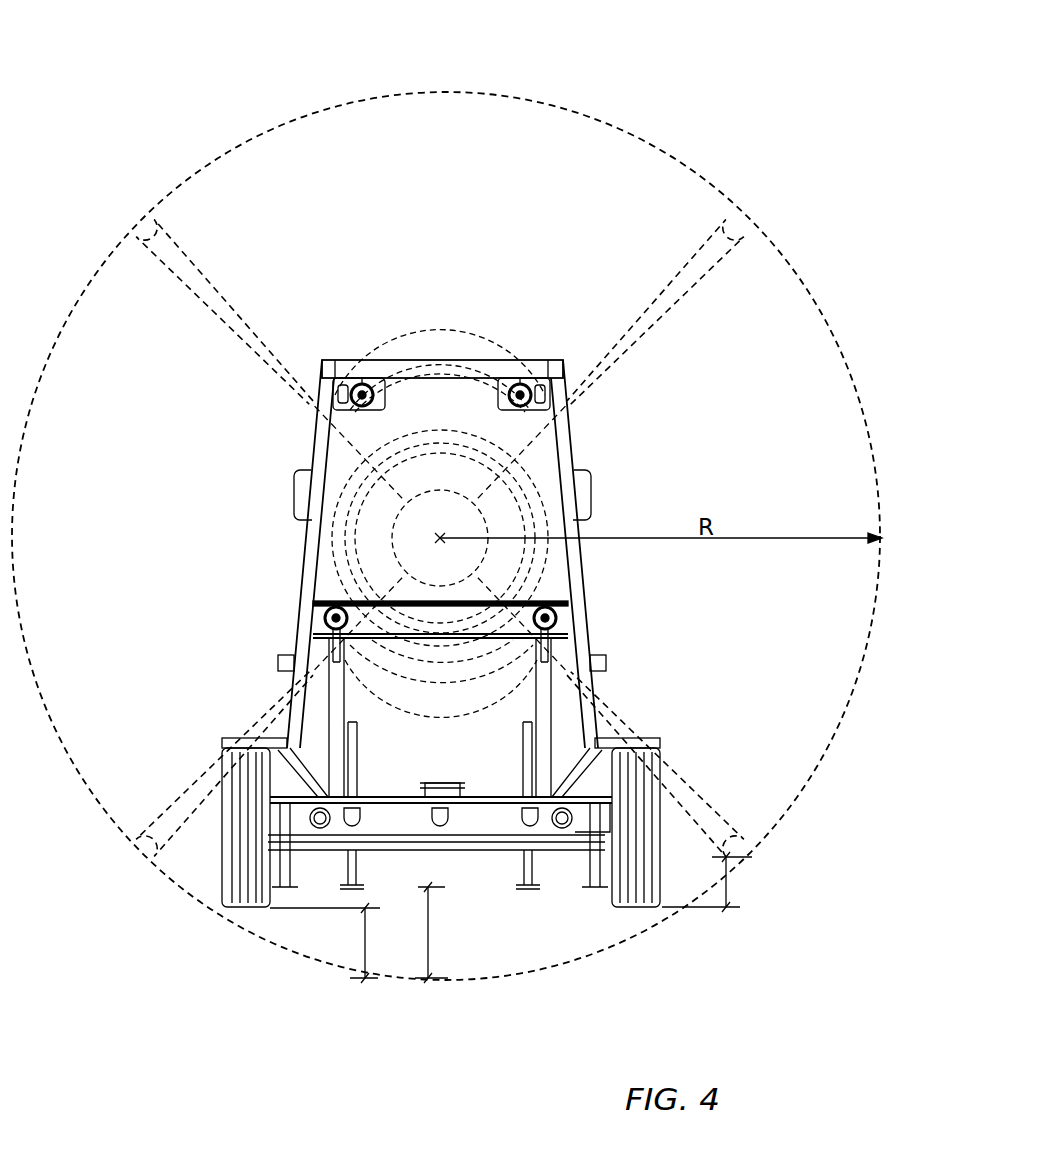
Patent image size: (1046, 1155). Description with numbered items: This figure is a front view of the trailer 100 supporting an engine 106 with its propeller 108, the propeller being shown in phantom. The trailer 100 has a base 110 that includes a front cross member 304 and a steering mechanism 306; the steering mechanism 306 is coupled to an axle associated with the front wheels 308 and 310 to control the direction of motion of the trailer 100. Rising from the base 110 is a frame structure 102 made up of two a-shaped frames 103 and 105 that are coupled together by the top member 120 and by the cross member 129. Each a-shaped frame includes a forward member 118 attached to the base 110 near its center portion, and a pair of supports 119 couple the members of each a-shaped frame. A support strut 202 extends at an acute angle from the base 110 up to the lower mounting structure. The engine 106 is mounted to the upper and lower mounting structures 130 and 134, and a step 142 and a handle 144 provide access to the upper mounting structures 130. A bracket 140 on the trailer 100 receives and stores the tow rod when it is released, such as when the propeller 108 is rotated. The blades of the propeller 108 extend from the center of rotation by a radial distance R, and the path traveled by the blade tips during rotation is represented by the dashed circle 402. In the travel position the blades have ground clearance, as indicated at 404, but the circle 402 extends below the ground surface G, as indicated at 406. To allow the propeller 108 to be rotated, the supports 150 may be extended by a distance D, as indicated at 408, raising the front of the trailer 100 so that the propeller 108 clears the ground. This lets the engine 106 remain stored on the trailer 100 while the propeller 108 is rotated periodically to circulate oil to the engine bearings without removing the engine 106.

The trailer 100 is at (391, 527).
The frame structure 102 is at (440, 538).
The a-shaped frame 103 is at (636, 462).
The a-shaped frame 105 is at (446, 533).
The engine 106 is at (443, 330).
The propeller 108 is at (690, 258).
The base 110 is at (420, 853).
The forward members 118 is at (572, 447).
The supports 119 is at (278, 662).
The top member 120 is at (352, 360).
The cross member 129 is at (558, 625).
The upper mounting structures 130 is at (350, 390).
The lower mounting structures 134 is at (325, 612).
The bracket 140 is at (440, 783).
The step 142 is at (243, 738).
The handle 144 is at (296, 495).
The supports 150 is at (360, 875).
The support strut 202 is at (338, 740).
The front cross member 304 is at (480, 815).
The steering mechanism 306 is at (470, 826).
The front wheel 308 is at (642, 895).
The front wheel 310 is at (220, 780).
The circle 402 is at (443, 90).
The ground clearance 404 is at (727, 885).
The circle extension below ground 406 is at (363, 937).
The extension distance 408 is at (425, 963).